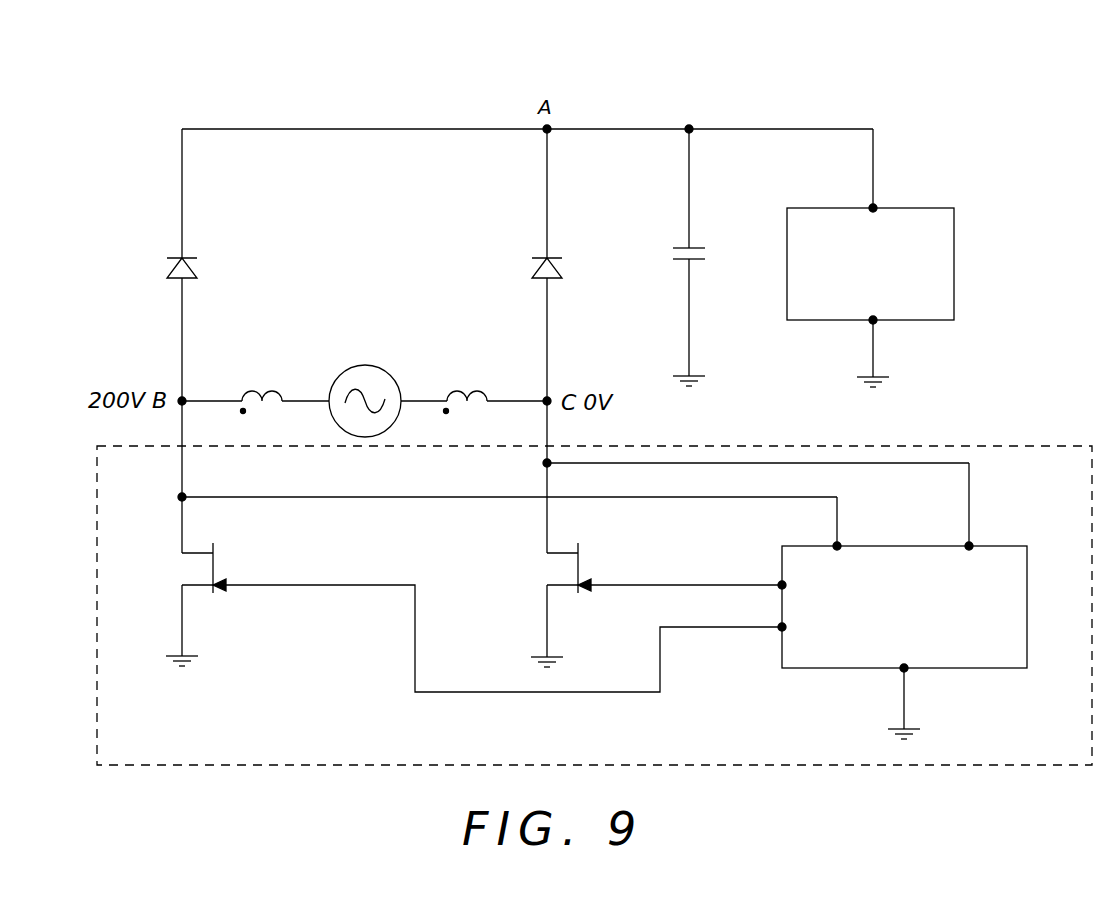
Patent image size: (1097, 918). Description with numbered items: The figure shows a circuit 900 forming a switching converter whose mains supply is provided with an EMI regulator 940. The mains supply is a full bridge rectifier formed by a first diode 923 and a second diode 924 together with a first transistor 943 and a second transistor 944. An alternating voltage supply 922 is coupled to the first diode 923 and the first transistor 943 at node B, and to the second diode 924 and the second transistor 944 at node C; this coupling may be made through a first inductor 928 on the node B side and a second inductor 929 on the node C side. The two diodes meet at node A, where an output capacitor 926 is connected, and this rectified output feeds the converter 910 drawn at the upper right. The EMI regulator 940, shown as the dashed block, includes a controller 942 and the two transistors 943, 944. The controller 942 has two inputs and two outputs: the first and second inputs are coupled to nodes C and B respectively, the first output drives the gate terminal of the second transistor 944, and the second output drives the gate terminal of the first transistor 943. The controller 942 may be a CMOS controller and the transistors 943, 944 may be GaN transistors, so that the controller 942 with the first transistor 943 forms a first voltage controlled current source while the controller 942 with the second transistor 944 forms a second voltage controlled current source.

The circuit 900 is at (226, 92).
The converter 910 is at (955, 285).
The alternating voltage supply 922 is at (366, 365).
The first diode 923 is at (169, 271).
The second diode 924 is at (533, 266).
The output capacitor 926 is at (671, 254).
The first inductor 928 is at (263, 389).
The second inductor 929 is at (466, 389).
The EMI regulator 940 is at (1020, 447).
The controller 942 is at (1028, 613).
The first transistor 943 is at (223, 565).
The second transistor 944 is at (590, 565).